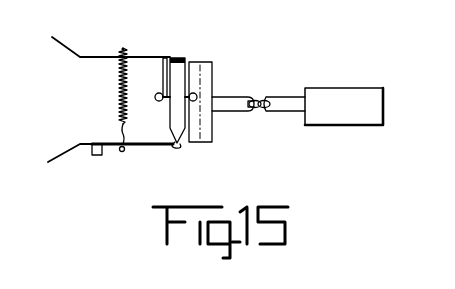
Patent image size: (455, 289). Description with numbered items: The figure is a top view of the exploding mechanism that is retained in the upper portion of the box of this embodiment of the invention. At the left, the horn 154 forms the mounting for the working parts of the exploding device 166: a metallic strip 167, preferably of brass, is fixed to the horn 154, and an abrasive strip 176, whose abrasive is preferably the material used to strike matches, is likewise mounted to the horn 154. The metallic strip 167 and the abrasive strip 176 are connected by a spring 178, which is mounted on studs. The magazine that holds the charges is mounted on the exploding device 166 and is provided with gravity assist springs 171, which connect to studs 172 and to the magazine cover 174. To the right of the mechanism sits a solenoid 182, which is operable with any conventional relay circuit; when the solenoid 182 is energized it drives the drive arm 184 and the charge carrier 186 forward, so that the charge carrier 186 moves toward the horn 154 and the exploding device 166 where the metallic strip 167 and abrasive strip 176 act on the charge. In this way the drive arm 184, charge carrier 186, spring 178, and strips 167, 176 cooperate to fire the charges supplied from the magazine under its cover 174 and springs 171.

The horn 154 is at (72, 46).
The exploding device 166 is at (138, 146).
The metallic strip 167 is at (135, 57).
The gravity assist springs 171 is at (157, 93).
The studs 172 is at (167, 58).
The magazine cover 174 is at (185, 62).
The abrasive strip 176 is at (176, 148).
The spring 178 is at (118, 98).
The solenoid 182 is at (368, 125).
The drive arm 184 is at (283, 97).
The charge carrier 186 is at (212, 78).